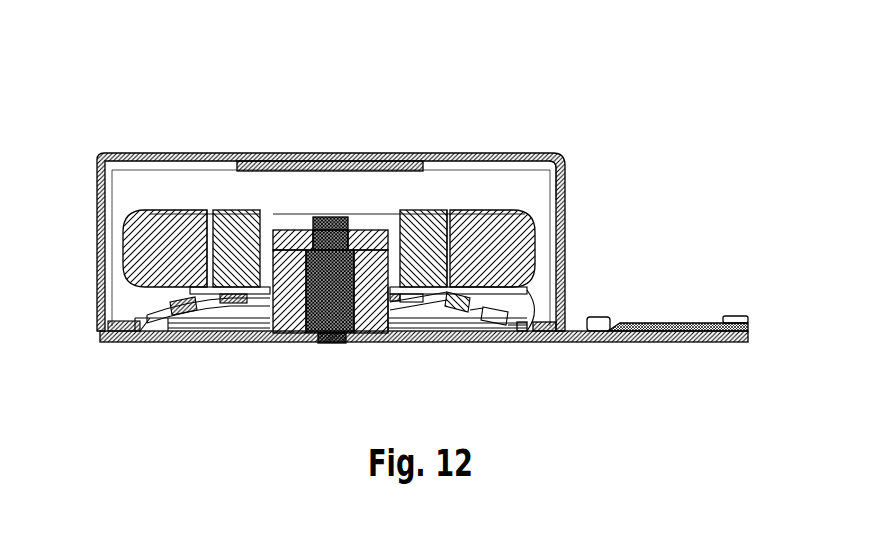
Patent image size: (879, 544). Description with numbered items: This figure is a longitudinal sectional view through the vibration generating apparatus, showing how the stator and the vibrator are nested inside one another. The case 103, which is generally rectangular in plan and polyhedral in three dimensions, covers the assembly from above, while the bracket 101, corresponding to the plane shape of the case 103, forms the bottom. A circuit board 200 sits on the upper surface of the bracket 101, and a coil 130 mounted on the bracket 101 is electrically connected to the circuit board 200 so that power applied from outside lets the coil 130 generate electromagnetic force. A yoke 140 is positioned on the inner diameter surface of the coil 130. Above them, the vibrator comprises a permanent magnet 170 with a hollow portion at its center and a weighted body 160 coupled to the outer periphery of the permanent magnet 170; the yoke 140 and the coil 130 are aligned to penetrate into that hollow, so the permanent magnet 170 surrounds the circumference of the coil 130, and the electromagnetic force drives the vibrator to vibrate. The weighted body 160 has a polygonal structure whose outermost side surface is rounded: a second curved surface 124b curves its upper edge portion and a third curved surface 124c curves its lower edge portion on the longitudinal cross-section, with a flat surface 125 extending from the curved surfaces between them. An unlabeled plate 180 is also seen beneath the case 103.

The bracket 101 is at (655, 342).
The case 103 is at (480, 153).
The second curved surface 124b is at (518, 214).
The third curved surface 124c is at (521, 331).
The flat surface 125 is at (500, 208).
The coil 130 is at (284, 337).
The yoke 140 is at (318, 340).
The weighted body 160 is at (535, 242).
The permanent magnet 170 is at (240, 222).
The top plate 180 is at (403, 171).
The circuit board 200 is at (690, 323).